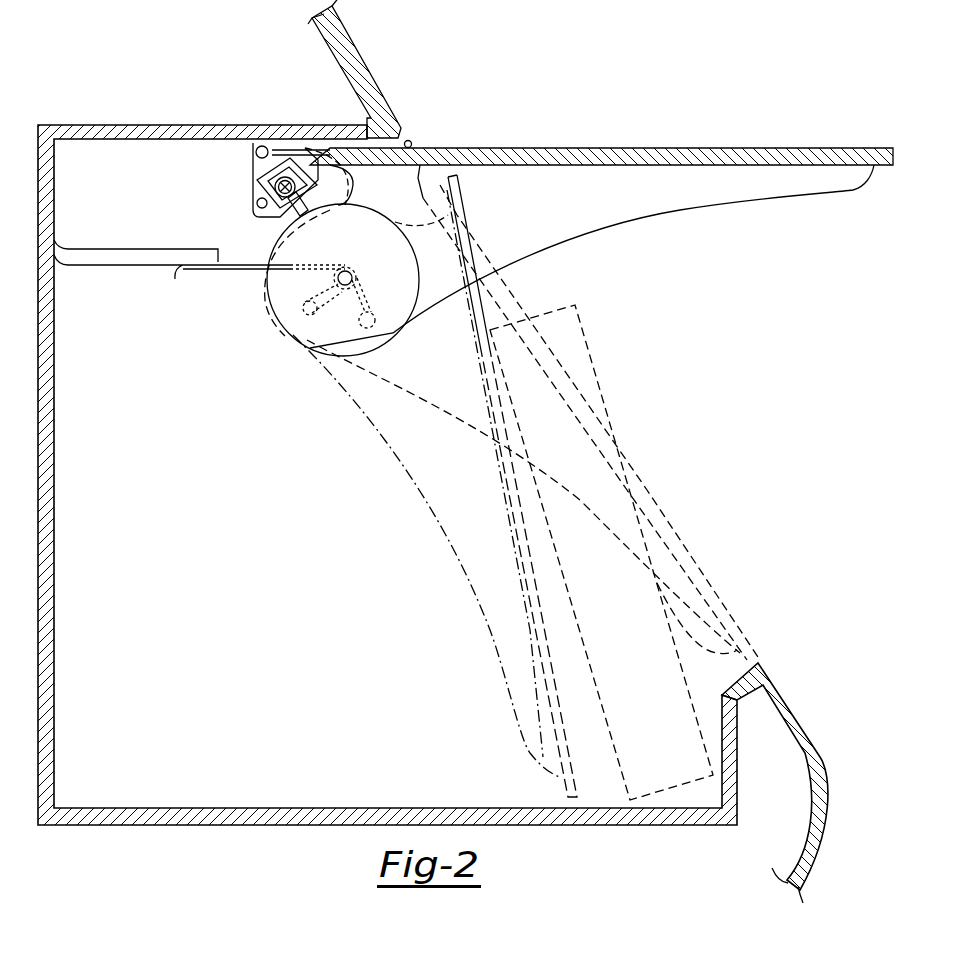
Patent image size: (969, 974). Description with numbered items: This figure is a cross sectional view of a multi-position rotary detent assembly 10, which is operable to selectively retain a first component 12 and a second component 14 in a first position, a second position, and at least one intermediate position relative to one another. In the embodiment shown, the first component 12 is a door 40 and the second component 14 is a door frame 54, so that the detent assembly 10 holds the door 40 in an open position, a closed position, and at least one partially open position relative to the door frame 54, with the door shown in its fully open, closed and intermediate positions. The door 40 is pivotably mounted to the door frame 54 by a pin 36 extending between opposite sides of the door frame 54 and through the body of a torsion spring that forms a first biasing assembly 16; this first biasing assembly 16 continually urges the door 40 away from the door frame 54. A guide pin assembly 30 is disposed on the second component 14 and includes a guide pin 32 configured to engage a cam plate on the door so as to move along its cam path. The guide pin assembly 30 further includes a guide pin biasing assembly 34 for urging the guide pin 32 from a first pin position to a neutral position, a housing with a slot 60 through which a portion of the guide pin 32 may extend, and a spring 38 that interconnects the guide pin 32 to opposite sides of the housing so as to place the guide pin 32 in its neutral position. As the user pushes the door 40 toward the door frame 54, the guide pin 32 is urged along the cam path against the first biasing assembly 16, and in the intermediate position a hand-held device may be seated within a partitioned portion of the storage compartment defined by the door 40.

The multi-position rotary detent assembly 10 is at (215, 217).
The first component 12 is at (582, 213).
The door 40 is at (590, 148).
The second component 14 is at (394, 69).
The door frame 54 is at (356, 50).
The first biasing assembly 16 is at (248, 273).
The guide pin assembly 30 is at (246, 152).
The guide pin 32 is at (300, 217).
The guide pin biasing assembly 34 is at (247, 181).
The spring 38 is at (252, 195).
The pin 36 is at (352, 270).
The slot 60 is at (350, 165).